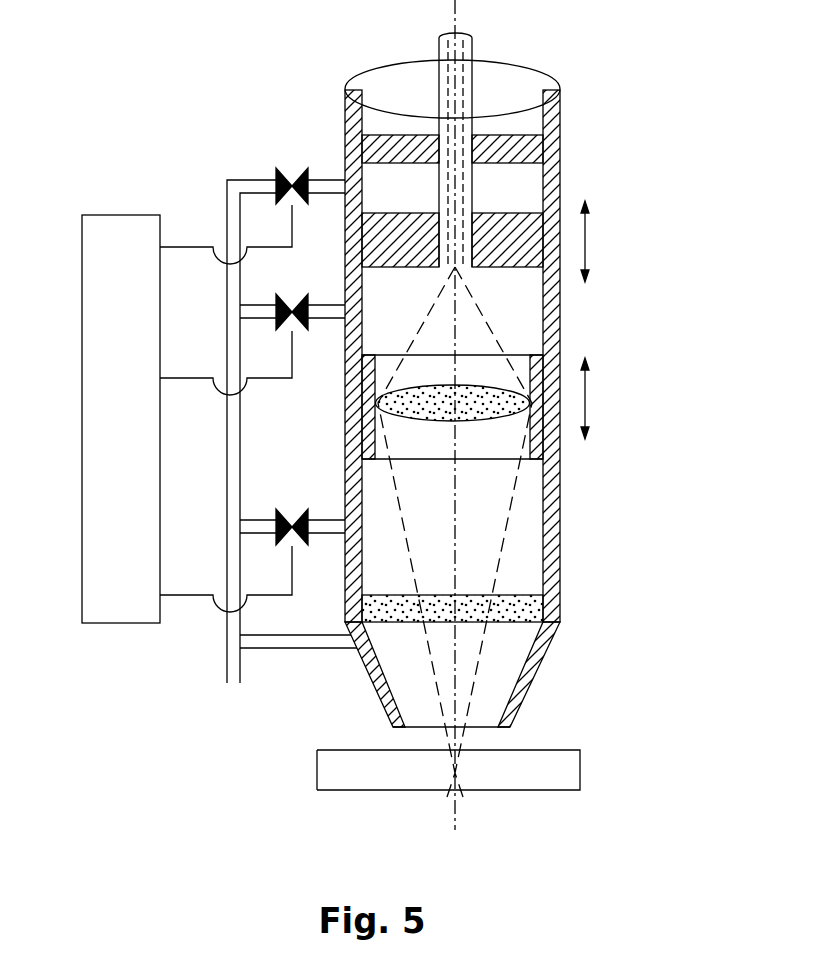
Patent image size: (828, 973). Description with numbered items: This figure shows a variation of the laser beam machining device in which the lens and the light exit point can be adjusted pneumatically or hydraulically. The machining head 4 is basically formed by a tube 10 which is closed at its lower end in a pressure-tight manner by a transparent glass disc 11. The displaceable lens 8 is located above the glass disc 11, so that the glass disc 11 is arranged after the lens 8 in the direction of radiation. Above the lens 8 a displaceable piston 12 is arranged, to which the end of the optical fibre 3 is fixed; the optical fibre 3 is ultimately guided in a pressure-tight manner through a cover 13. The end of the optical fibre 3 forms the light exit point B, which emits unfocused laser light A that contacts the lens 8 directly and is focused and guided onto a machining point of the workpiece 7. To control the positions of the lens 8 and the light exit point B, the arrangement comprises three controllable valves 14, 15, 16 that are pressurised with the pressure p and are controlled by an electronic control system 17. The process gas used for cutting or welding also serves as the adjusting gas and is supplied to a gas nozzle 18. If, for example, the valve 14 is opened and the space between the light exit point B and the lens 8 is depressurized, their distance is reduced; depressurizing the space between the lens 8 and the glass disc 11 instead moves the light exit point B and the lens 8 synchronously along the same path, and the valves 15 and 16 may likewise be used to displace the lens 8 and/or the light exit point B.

The optical fibre 3 is at (473, 55).
The machining head 4 is at (616, 50).
The workpiece 7 is at (568, 777).
The lens 8 is at (503, 417).
The tube 10 is at (558, 538).
The glass disc 11 is at (548, 615).
The piston 12 is at (558, 190).
The cover 13 is at (558, 120).
The valve 14 is at (293, 178).
The valve 15 is at (290, 302).
The valve 16 is at (288, 518).
The electronic control system 17 is at (108, 227).
The gas nozzle 18 is at (535, 655).
The laser light A is at (467, 678).
The light exit point B is at (473, 270).
The pressure p is at (232, 708).